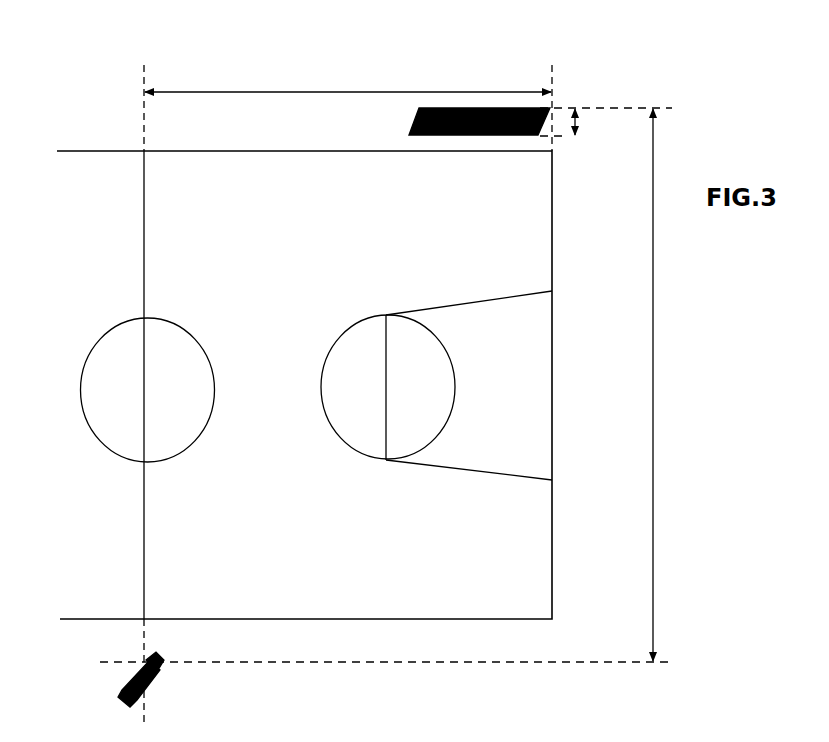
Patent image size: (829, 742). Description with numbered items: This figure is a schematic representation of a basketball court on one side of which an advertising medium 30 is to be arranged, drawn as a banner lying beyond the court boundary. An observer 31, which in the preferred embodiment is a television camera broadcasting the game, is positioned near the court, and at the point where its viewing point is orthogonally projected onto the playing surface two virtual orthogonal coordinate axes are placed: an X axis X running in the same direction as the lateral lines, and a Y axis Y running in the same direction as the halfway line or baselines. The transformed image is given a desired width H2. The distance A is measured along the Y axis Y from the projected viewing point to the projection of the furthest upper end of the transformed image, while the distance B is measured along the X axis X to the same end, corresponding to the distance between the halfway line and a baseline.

The virtual advertisement 30 is at (398, 125).
The observer 31 is at (104, 694).
The distance A is at (666, 385).
The distance B is at (348, 101).
The width H2 is at (606, 122).
The X axis X is at (386, 683).
The Y axis Y is at (126, 393).